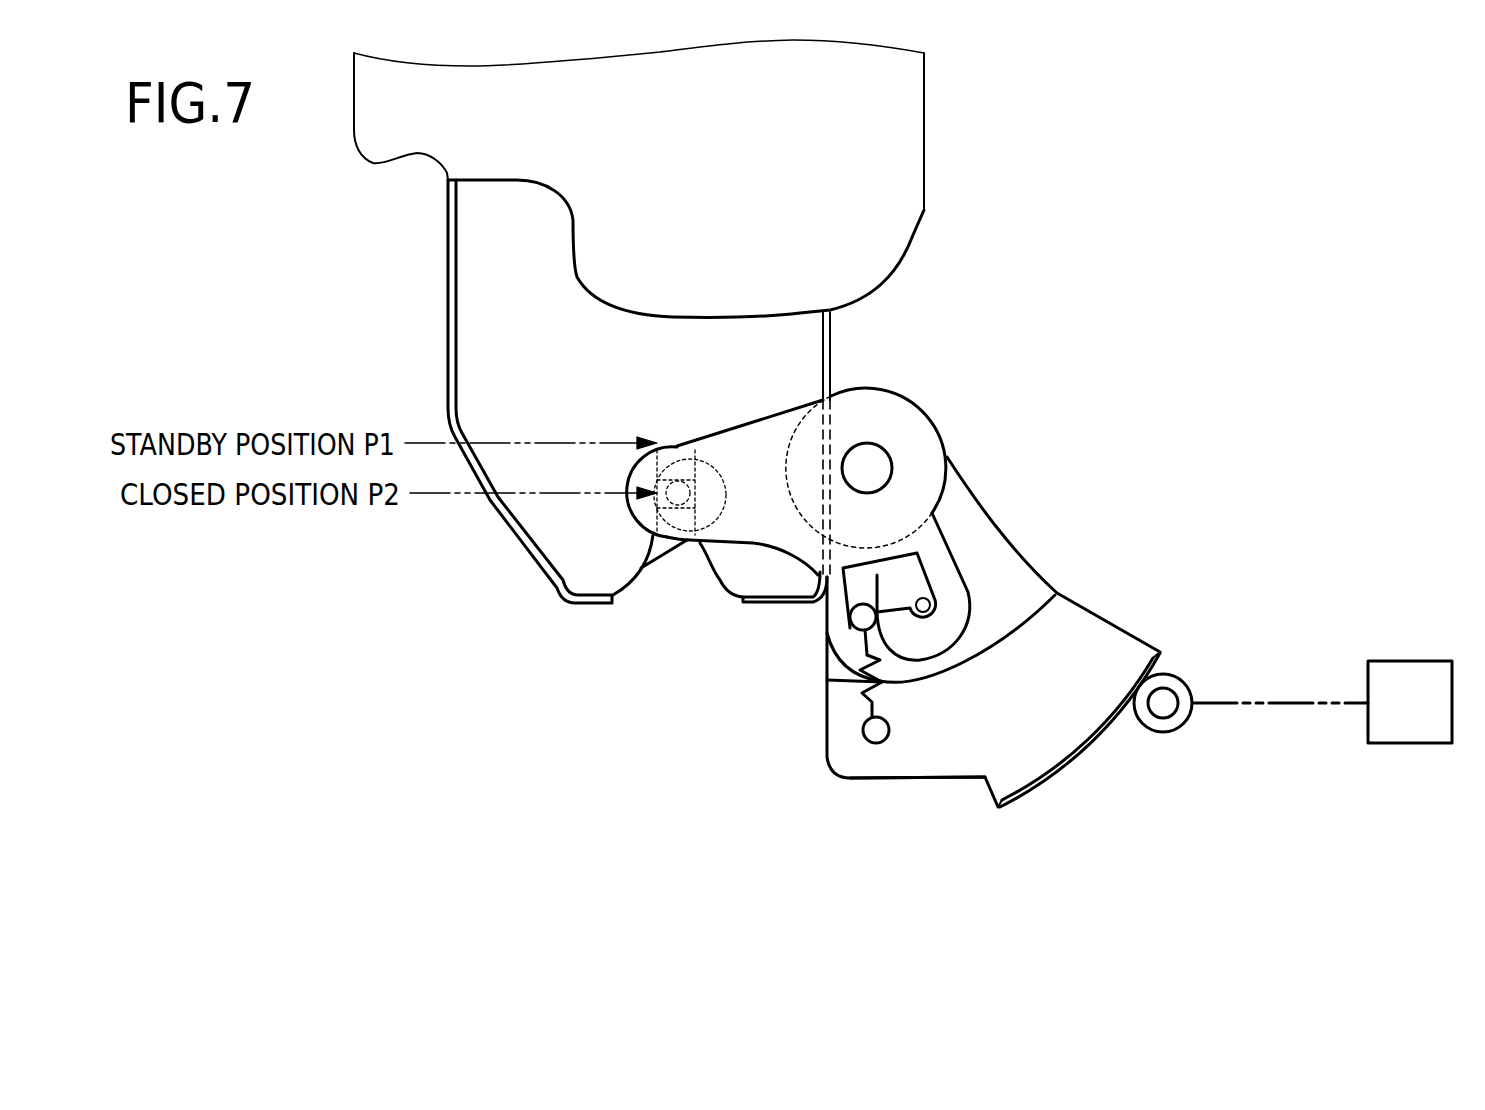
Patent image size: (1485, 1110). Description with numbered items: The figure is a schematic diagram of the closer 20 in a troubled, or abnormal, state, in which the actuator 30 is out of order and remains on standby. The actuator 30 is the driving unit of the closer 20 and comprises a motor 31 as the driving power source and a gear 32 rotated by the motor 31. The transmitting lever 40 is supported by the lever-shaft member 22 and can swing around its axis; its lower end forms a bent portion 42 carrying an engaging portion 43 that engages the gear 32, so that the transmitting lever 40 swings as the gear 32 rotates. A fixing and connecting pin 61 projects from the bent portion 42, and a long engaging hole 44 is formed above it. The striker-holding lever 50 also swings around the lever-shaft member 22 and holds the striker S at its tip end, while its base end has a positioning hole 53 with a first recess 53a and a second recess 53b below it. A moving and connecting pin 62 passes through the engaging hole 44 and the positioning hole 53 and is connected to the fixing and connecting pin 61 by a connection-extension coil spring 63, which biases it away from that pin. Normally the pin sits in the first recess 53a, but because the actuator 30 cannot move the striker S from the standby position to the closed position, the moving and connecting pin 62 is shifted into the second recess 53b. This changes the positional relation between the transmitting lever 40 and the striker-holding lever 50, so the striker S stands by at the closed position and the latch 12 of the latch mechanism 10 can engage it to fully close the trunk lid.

The latch mechanism 10 is at (950, 143).
The latch 12 is at (655, 555).
The closer 20 is at (1080, 393).
The lever-shaft member 22 is at (880, 462).
The actuator 30 is at (1423, 815).
The motor 31 is at (1410, 745).
The gear 32 is at (1168, 730).
The transmitting lever 40 is at (1003, 563).
The bent portion 42 is at (970, 768).
The engaging portion 43 is at (1032, 800).
The engaging hole 44 is at (890, 585).
The striker-holding lever 50 is at (730, 532).
The positioning hole 53 is at (963, 590).
The first recess 53a is at (940, 605).
The second recess 53b is at (867, 618).
The fixing and connecting pin 61 is at (875, 743).
The moving and connecting pin 62 is at (858, 620).
The connection-extension coil spring 63 is at (863, 697).
The striker S is at (678, 493).